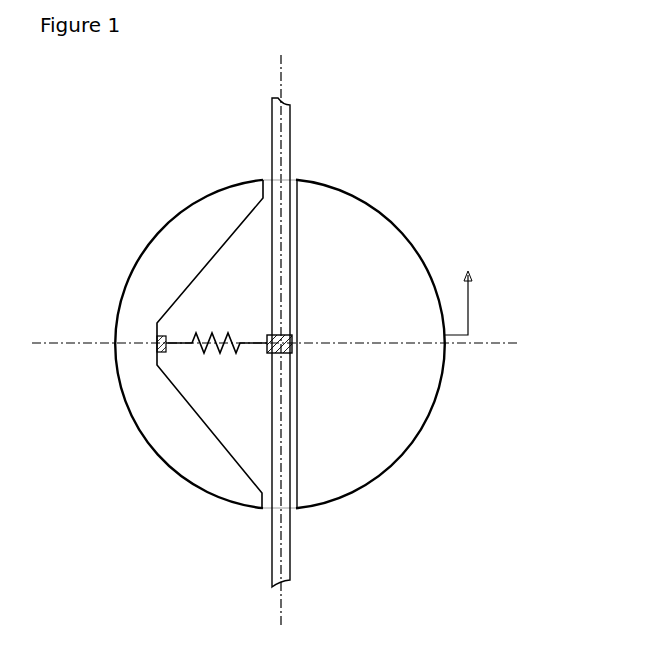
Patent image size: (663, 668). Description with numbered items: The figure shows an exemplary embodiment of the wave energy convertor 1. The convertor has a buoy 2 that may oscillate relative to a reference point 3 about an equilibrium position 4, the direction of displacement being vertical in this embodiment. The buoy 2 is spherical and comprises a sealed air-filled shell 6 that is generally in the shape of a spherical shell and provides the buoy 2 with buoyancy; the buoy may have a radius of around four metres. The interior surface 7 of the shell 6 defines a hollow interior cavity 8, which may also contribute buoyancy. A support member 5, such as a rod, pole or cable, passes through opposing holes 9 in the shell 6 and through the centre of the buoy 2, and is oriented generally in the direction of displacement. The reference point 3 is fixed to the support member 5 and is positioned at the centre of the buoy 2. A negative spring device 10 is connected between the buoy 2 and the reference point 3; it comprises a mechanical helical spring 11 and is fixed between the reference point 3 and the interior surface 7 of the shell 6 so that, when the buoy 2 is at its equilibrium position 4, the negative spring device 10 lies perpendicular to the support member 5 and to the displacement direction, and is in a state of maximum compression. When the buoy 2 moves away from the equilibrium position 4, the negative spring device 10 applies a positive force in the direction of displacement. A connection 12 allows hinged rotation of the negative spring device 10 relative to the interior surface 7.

The wave energy convertor 1 is at (84, 201).
The buoy 2 is at (390, 213).
The reference point 3 is at (288, 352).
The equilibrium position 4 is at (503, 350).
The support member 5 is at (287, 142).
The shell 6 is at (207, 220).
The interior surface 7 is at (238, 223).
The hollow interior cavity 8 is at (218, 275).
The holes 9 is at (296, 181).
The negative spring device 10 is at (210, 372).
The mechanical helical spring 11 is at (215, 330).
The connection 12 is at (157, 341).